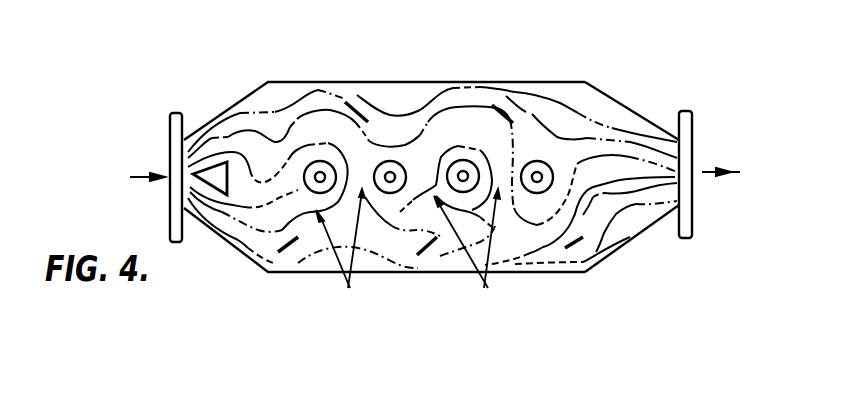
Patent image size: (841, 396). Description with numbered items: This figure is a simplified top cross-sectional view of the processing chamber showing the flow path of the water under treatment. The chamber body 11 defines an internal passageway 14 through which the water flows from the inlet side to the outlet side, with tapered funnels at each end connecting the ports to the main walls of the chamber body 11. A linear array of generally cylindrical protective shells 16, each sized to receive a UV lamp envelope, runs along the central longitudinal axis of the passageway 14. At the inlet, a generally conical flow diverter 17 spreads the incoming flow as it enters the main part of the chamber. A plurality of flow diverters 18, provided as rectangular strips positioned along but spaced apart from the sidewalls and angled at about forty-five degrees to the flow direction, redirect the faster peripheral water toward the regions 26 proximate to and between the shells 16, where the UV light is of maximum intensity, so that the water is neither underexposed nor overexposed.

The chamber body 11 is at (441, 82).
The internal passageway 14 is at (592, 105).
The protective shells 16 is at (335, 161).
The flow diverter 17 is at (209, 168).
The flow diverters 18 is at (353, 105).
The regions 26 is at (381, 309).